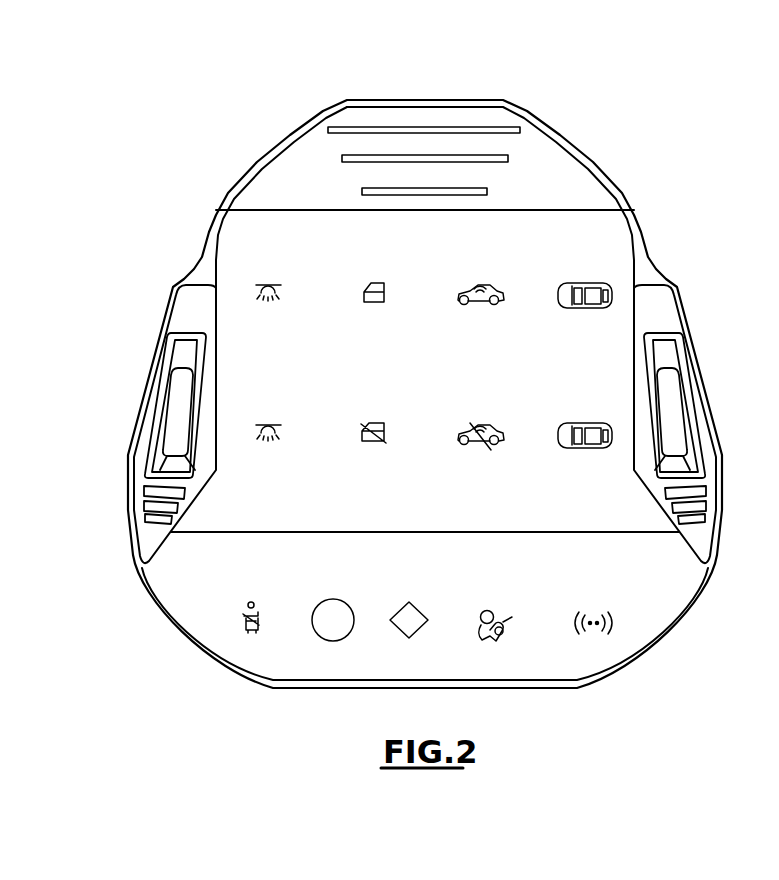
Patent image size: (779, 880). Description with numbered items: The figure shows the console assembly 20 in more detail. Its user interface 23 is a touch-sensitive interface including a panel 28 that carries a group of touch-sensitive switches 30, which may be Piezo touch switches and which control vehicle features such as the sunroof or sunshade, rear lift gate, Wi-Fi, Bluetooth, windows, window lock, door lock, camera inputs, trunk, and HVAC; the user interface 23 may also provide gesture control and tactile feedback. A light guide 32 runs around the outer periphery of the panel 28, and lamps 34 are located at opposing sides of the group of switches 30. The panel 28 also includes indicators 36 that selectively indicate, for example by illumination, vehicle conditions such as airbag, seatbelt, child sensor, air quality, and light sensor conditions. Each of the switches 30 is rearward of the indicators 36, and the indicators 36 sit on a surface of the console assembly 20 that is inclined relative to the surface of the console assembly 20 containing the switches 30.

The console assembly 20 is at (206, 136).
The user interface 23 is at (260, 261).
The panel 28 is at (320, 209).
The touch-sensitive switches 30 is at (377, 282).
The light guide 32 is at (449, 100).
The lamps 34 is at (182, 414).
The indicators 36 is at (315, 633).